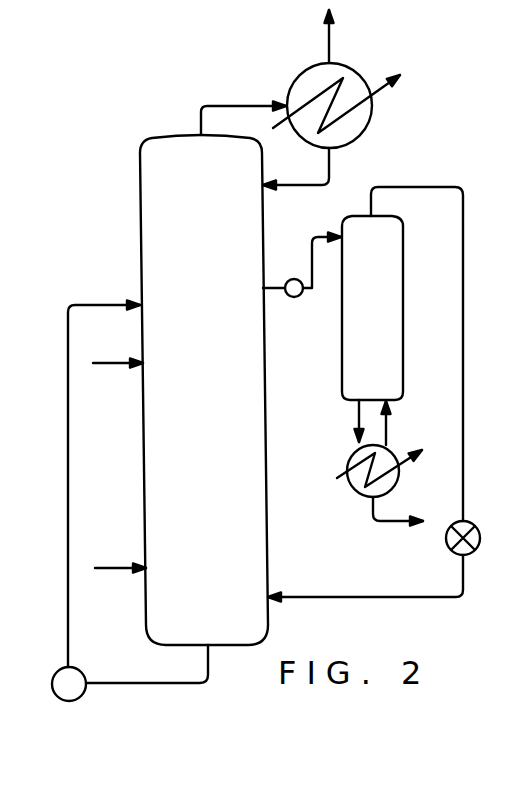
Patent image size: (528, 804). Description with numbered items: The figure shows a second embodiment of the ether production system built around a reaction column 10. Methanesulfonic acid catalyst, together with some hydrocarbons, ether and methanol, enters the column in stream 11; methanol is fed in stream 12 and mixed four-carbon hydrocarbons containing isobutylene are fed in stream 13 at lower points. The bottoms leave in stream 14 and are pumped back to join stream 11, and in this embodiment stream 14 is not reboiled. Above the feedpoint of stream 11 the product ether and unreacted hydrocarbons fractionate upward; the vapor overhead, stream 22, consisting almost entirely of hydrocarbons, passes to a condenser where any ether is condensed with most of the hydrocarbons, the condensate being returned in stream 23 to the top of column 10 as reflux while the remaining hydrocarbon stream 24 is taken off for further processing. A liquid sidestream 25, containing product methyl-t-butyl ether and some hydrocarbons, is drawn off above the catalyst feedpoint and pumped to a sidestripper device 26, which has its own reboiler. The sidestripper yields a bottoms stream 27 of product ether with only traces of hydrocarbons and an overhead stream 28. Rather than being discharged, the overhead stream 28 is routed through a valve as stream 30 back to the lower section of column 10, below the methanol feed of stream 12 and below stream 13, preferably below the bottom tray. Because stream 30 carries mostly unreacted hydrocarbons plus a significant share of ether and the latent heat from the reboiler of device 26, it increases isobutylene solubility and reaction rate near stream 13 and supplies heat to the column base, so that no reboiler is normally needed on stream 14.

The reaction column 10 is at (140, 192).
The stream 11 is at (108, 305).
The stream 12 is at (117, 363).
The stream 13 is at (112, 567).
The bottoms stream 14 is at (210, 660).
The vapor overhead stream 22 is at (247, 104).
The condensate stream 23 is at (300, 186).
The hydrocarbon stream 24 is at (326, 41).
The liquid sidestream 25 is at (272, 289).
The sidestripper device 26 is at (390, 258).
The bottoms stream 27 is at (392, 523).
The overhead stream 28 is at (403, 187).
The stream 30 is at (362, 598).